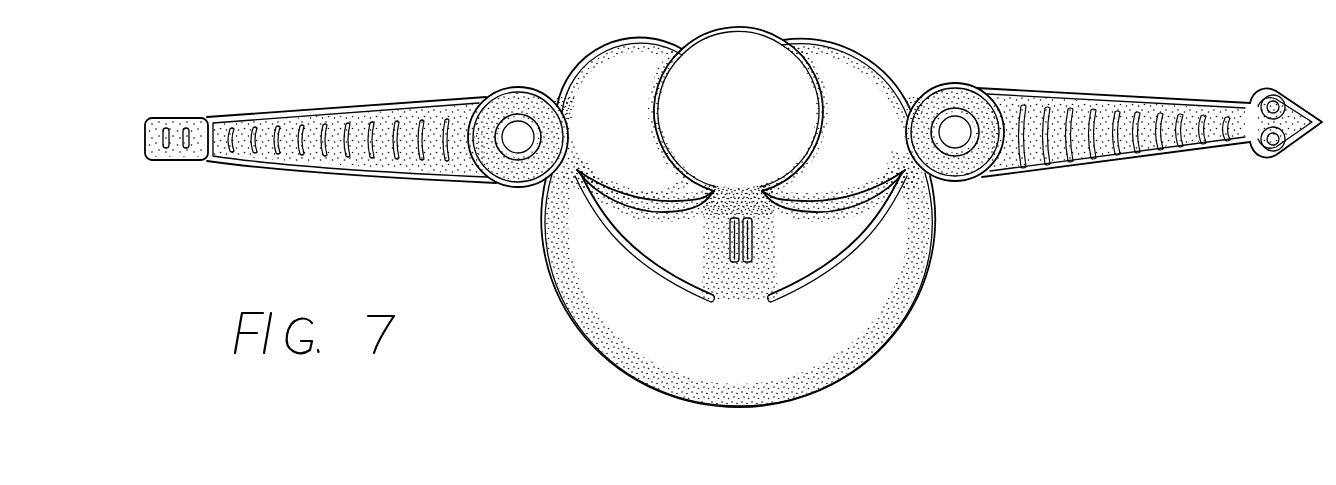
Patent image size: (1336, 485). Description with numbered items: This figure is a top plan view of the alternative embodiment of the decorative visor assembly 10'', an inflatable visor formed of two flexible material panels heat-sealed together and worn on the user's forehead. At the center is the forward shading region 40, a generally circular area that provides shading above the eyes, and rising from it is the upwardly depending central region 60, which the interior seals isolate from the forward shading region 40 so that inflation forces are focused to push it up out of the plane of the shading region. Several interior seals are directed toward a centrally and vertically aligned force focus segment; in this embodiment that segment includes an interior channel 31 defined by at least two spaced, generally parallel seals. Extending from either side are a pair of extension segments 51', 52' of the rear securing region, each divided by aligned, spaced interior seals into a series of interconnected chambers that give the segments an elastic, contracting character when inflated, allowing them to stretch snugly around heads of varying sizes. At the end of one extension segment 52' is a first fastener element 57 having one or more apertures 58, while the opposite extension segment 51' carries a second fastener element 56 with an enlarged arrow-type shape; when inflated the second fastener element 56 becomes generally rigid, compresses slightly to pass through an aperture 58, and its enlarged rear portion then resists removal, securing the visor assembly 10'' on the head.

The visor assembly 10'' is at (733, 216).
The interior channel 31 is at (728, 240).
The forward shading region 40 is at (782, 335).
The extension segment 51' is at (387, 161).
The extension segment 52' is at (1078, 149).
The second fastener element 56 is at (1294, 100).
The first fastener element 57 is at (177, 162).
The aperture 58 is at (167, 128).
The upwardly depending central region 60 is at (707, 72).